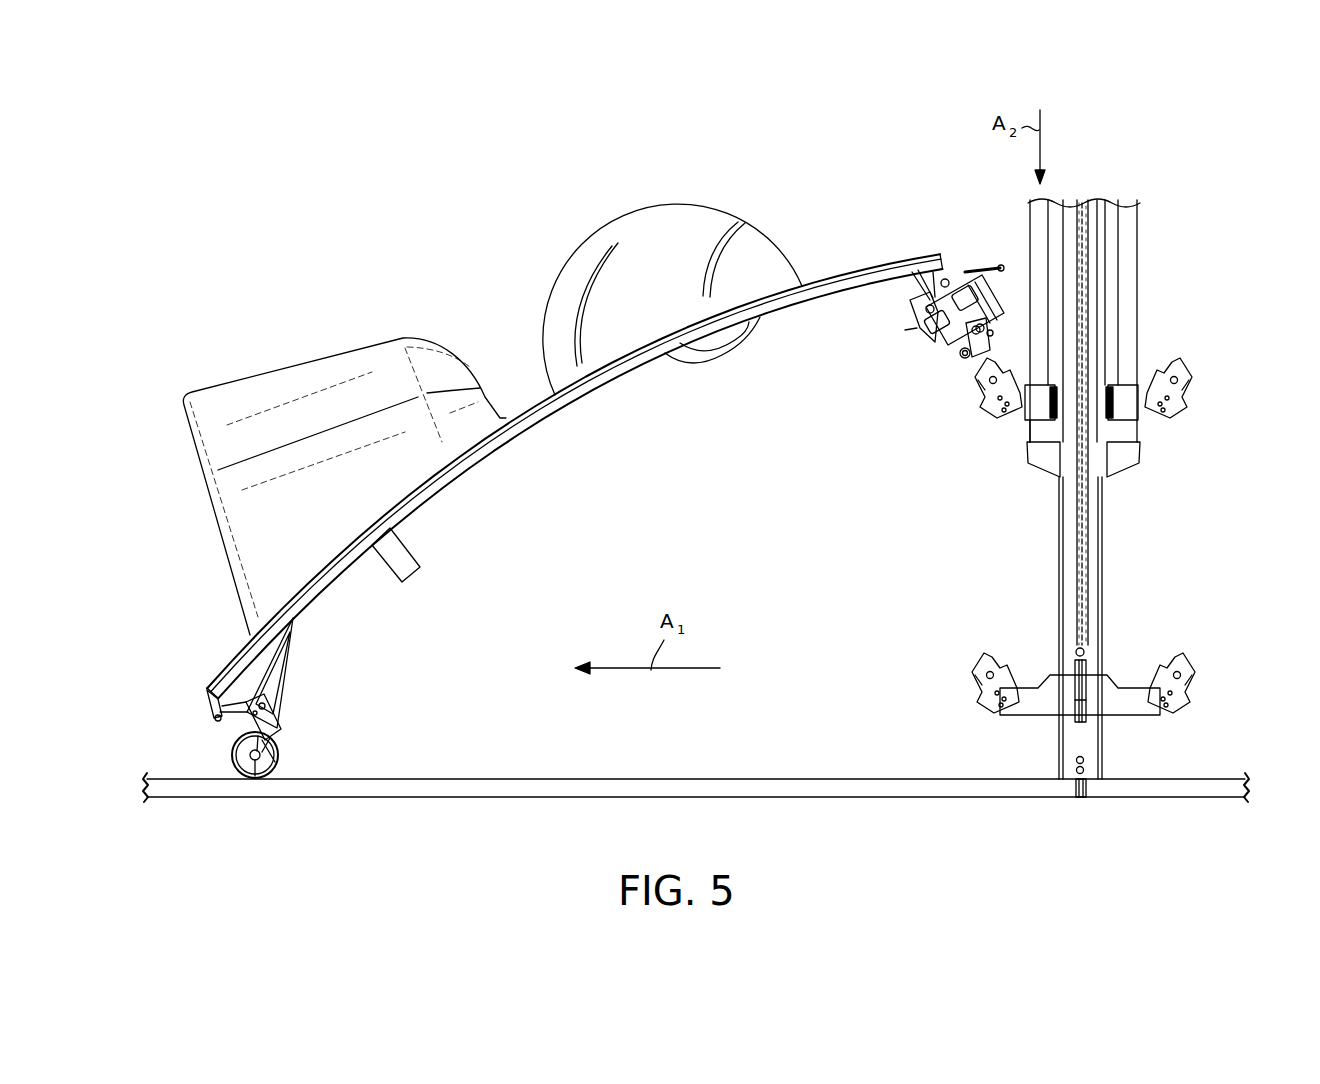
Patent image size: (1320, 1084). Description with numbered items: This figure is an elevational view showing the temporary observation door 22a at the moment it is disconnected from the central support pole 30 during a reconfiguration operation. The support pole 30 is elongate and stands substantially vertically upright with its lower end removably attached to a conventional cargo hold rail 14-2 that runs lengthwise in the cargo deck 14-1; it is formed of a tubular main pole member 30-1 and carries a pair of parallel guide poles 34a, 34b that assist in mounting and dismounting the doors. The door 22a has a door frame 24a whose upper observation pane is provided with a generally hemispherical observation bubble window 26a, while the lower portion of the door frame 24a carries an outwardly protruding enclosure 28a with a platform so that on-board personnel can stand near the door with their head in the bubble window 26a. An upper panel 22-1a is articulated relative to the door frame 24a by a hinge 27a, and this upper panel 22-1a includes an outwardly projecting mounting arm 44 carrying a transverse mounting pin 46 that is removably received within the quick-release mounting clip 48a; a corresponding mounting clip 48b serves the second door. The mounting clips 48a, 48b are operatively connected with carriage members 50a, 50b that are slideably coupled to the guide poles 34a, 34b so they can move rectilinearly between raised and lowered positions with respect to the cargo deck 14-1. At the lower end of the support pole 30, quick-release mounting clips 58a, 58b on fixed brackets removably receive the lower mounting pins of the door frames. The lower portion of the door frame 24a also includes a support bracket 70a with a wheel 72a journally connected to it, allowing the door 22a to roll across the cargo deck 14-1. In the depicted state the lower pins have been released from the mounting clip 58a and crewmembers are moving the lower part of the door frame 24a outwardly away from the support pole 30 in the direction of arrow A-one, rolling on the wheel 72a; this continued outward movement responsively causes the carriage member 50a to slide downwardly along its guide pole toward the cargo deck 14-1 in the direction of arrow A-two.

The cargo deck 14-1 is at (478, 757).
The cargo hold rail 14-2 is at (1088, 797).
The temporary observation door 22a is at (496, 392).
The upper panel 22-1a is at (926, 275).
The door frame 24a is at (538, 410).
The observation bubble window 26a is at (681, 298).
The hinge 27a is at (917, 316).
The enclosure 28a is at (336, 516).
The central support pole 30 is at (1078, 448).
The main pole member 30-1 is at (1097, 292).
The guide pole 34a is at (1040, 215).
The guide pole 34b is at (1127, 229).
The mounting arm 44 is at (963, 343).
The mounting pin 46 is at (963, 358).
The quick-release mounting clip 48a is at (985, 394).
The quick-release mounting clip 48b is at (1165, 377).
The carriage member 50a is at (1028, 412).
The carriage member 50b is at (1123, 412).
The quick-release mounting clip 58a is at (973, 684).
The quick-release mounting clip 58b is at (1183, 683).
The support bracket 70a is at (287, 672).
The wheel 72a is at (283, 755).